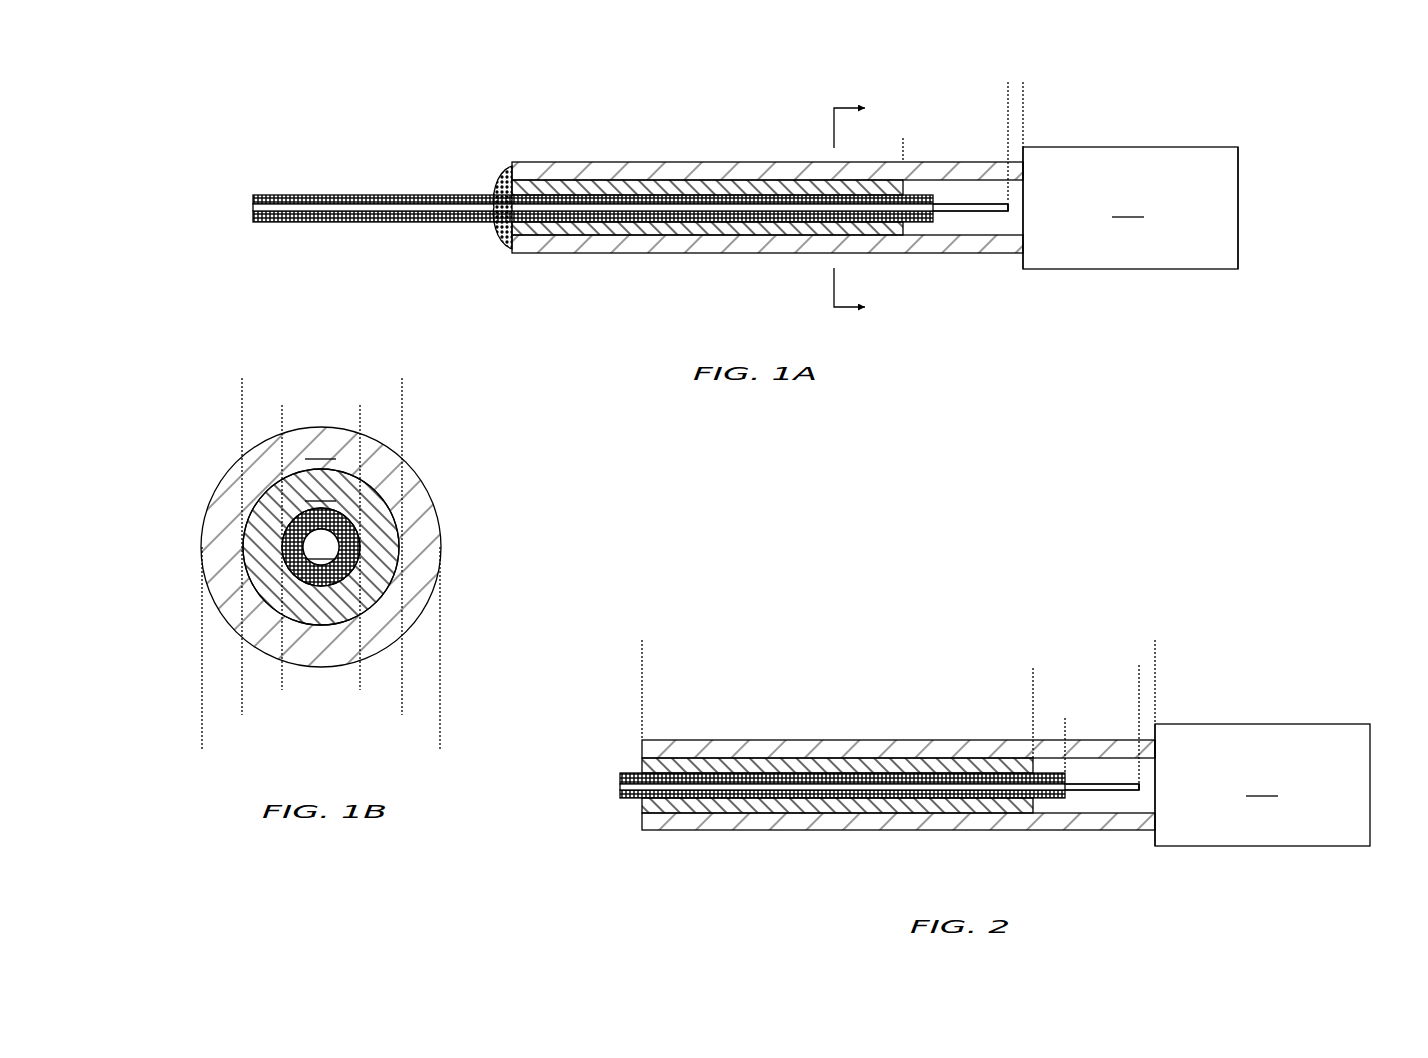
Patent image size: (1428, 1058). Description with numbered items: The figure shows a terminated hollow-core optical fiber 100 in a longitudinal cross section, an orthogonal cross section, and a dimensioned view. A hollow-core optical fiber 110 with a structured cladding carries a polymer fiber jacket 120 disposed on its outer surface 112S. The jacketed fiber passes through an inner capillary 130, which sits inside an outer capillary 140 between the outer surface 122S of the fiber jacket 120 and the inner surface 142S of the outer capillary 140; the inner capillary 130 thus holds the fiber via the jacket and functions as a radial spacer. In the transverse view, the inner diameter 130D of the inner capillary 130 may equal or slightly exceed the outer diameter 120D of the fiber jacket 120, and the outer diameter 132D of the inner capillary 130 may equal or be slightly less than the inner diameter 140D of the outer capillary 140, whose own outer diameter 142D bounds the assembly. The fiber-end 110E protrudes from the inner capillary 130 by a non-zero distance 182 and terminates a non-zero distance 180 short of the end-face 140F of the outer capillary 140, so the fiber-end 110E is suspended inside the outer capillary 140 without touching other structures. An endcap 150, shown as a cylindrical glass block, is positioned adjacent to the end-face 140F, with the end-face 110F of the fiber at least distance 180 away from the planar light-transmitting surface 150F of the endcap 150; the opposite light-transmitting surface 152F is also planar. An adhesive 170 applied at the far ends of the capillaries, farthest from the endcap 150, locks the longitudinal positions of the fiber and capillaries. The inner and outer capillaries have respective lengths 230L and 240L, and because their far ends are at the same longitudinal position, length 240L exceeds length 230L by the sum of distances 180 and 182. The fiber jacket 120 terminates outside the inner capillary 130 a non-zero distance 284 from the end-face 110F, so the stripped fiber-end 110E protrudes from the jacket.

In FIG. 1A, the terminated hollow-core optical fiber 100 is at (253, 62).
In FIG. 1B, the terminated hollow-core optical fiber 100 is at (206, 411).
In FIG. 2, the terminated hollow-core optical fiber 100 is at (1291, 636).
In FIG. 1A, the hollow-core optical fiber 110 is at (253, 206).
In FIG. 1B, the hollow-core optical fiber 110 is at (373, 485).
In FIG. 2, the hollow-core optical fiber 110 is at (620, 787).
In FIG. 1A, the fiber-end 110E is at (960, 213).
In FIG. 2, the fiber-end 110E is at (1093, 790).
In FIG. 1A, the end-face 110F is at (1012, 208).
In FIG. 2, the end-face 110F is at (1142, 787).
In FIG. 1B, the outer surface 112S is at (334, 528).
In FIG. 1A, the fiber jacket 120 is at (398, 195).
In FIG. 1B, the fiber jacket 120 is at (285, 540).
In FIG. 2, the fiber jacket 120 is at (635, 773).
In FIG. 1B, the outer diameter 120D is at (282, 683).
In FIG. 1B, the outer surface 122S is at (366, 549).
In FIG. 1A, the inner capillary 130 is at (758, 237).
In FIG. 1B, the inner capillary 130 is at (321, 547).
In FIG. 2, the inner capillary 130 is at (888, 813).
In FIG. 1B, the inner diameter 130D is at (282, 412).
In FIG. 1B, the outer diameter 132D is at (242, 385).
In FIG. 1A, the outer capillary 140 is at (672, 162).
In FIG. 1B, the outer capillary 140 is at (349, 547).
In FIG. 2, the outer capillary 140 is at (940, 740).
In FIG. 1B, the inner diameter 140D is at (242, 707).
In FIG. 1A, the end-face 140F is at (1027, 170).
In FIG. 2, the end-face 140F is at (1158, 748).
In FIG. 1B, the outer diameter 142D is at (202, 735).
In FIG. 1B, the inner surface 142S is at (394, 531).
In FIG. 1A, the endcap 150 is at (1152, 216).
In FIG. 2, the endcap 150 is at (1249, 795).
In FIG. 1A, the light-transmitting surface 150F is at (1018, 229).
In FIG. 2, the light-transmitting surface 150F is at (1152, 806).
In FIG. 1A, the light-transmitting surface 152F is at (1243, 232).
In FIG. 1A, the adhesive 170 is at (494, 188).
In FIG. 1A, the non-zero distance 180 is at (1047, 98).
In FIG. 2, the non-zero distance 180 is at (1178, 676).
In FIG. 1A, the non-zero distance 182 is at (1008, 148).
In FIG. 2, the non-zero distance 182 is at (1139, 701).
In FIG. 2, the length 230L is at (1033, 676).
In FIG. 2, the length 240L is at (1155, 651).
In FIG. 2, the non-zero distance 284 is at (1065, 726).